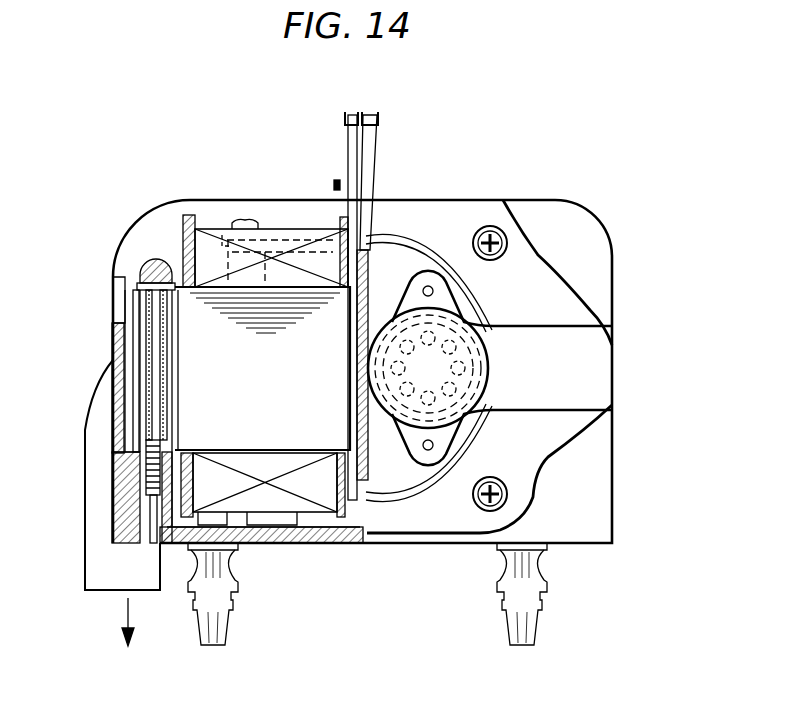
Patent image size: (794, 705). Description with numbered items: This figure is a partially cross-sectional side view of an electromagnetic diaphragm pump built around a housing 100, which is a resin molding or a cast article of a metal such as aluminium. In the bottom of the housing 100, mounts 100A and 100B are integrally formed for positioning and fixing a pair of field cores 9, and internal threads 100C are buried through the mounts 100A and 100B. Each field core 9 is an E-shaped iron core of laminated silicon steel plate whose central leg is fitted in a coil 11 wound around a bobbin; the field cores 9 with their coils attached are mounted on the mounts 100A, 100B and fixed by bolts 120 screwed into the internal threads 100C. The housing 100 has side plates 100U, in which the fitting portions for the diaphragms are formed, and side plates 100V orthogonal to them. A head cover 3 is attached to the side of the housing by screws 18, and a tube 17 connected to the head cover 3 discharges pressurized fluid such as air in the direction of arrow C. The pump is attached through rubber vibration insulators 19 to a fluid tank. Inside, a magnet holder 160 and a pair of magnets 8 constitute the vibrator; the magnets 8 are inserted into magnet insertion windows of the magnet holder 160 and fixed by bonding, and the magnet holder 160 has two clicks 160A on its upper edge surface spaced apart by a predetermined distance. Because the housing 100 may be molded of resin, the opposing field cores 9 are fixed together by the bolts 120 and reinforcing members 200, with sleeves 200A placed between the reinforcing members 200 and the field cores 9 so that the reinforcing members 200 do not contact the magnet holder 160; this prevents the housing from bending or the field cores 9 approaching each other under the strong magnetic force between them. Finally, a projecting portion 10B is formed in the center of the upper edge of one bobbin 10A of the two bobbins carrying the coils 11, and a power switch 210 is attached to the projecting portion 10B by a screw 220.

The head cover 3 is at (452, 213).
The magnet 8 is at (367, 432).
The field core 9 is at (183, 347).
The bobbin 10A is at (186, 225).
The projecting portion 10B is at (347, 180).
The coil 11 is at (280, 215).
The tube 17 is at (97, 567).
The screw 18 is at (500, 228).
The rubber vibration insulator 19 is at (216, 630).
The housing 100 is at (208, 196).
The mount 100A is at (300, 520).
The mount 100B is at (132, 433).
The internal thread 100C is at (143, 522).
The side plate 100U is at (593, 220).
The side plate 100V is at (120, 330).
The bolt 120 is at (145, 268).
The magnet holder 160 is at (372, 250).
The click 160A is at (378, 245).
The reinforcing member 200 is at (287, 240).
The sleeve 200A is at (222, 240).
The power switch 210 is at (372, 121).
The screw 220 is at (366, 185).
The arrow C is at (136, 617).